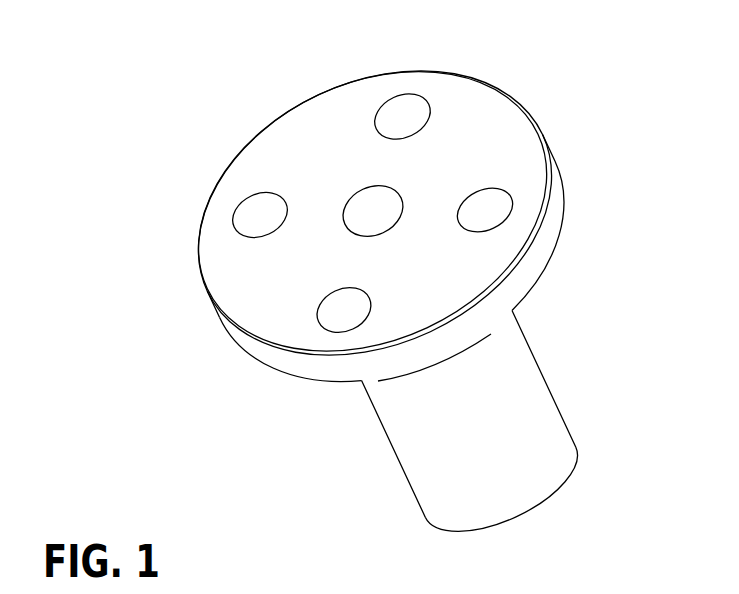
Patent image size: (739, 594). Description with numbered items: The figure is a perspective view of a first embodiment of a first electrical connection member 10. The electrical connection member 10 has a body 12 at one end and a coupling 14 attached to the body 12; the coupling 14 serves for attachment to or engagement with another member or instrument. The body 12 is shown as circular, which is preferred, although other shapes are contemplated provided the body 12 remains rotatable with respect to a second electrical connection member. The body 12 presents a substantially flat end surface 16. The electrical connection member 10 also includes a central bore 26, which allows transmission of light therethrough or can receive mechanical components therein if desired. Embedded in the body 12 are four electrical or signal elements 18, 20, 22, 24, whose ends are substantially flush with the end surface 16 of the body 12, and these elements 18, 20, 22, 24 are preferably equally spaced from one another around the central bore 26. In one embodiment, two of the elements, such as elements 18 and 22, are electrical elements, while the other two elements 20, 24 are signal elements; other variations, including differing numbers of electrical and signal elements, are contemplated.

The first electrical connection member 10 is at (381, 284).
The body 12 is at (502, 143).
The coupling 14 is at (528, 400).
The end surface 16 is at (510, 168).
The electrical element 18 is at (492, 217).
The signal element 20 is at (342, 317).
The electrical element 22 is at (247, 215).
The signal element 24 is at (392, 117).
The central bore 26 is at (362, 218).